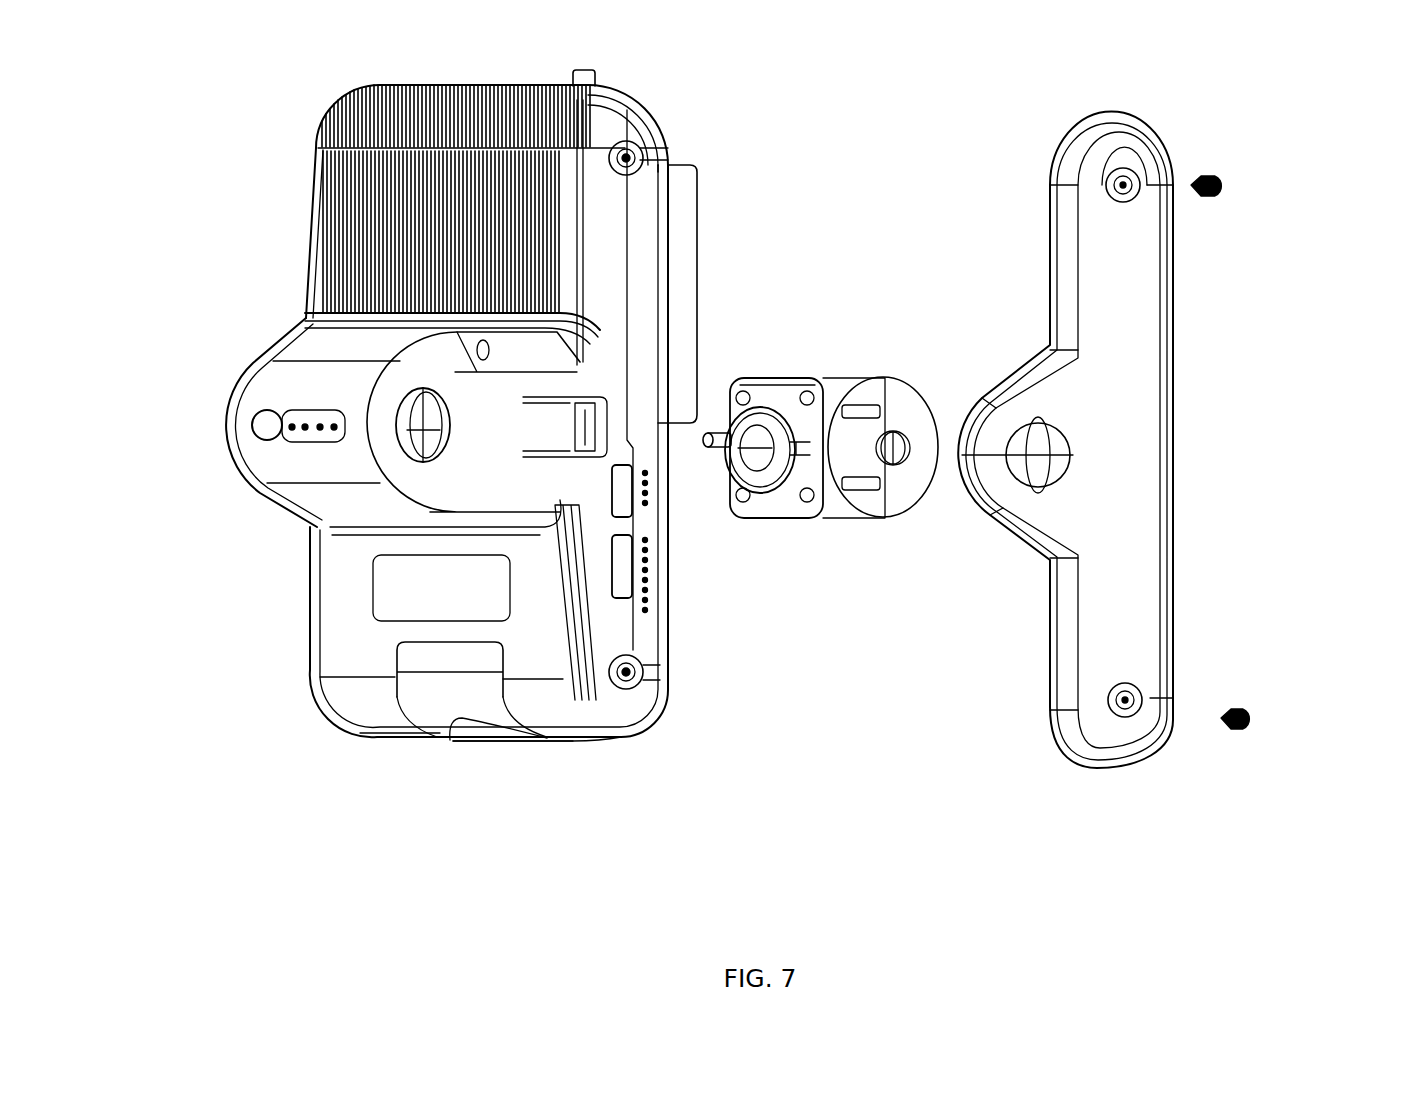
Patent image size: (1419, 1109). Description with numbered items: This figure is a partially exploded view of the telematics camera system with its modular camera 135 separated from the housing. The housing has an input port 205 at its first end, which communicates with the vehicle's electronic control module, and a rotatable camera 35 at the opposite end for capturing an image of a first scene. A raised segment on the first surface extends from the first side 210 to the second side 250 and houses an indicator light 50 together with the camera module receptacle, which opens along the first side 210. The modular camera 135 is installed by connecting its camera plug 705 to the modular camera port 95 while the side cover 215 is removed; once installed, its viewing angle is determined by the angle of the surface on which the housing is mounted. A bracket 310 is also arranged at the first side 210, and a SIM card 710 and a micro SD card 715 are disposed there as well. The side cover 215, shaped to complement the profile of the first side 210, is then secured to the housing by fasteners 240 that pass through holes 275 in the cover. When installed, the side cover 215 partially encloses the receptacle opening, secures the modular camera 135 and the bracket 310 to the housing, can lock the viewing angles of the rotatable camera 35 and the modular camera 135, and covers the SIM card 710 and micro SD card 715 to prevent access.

The rotatable camera 35 is at (467, 747).
The indicator light 50 is at (258, 430).
The modular camera port 95 is at (420, 432).
The modular camera 135 is at (848, 378).
The input port 205 is at (598, 78).
The first side 210 is at (668, 655).
The side cover 215 is at (1120, 450).
The fastener 240 is at (1306, 735).
The second side 250 is at (447, 413).
The hole 275 is at (1149, 803).
The bracket 310 is at (700, 240).
The camera plug 705 is at (715, 432).
The SIM card 710 is at (635, 478).
The micro SD card 715 is at (635, 575).